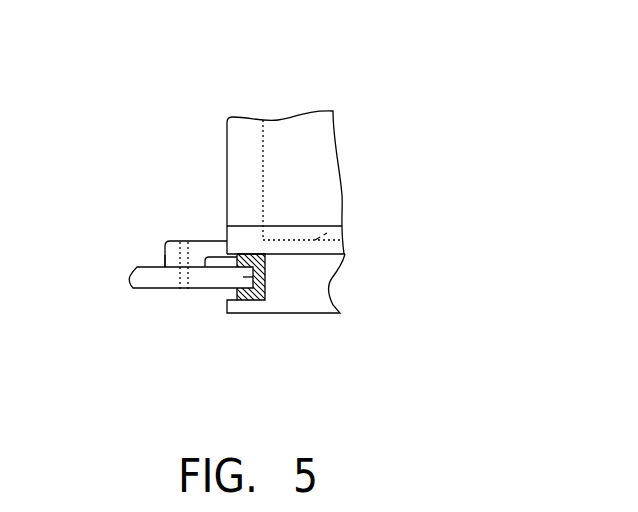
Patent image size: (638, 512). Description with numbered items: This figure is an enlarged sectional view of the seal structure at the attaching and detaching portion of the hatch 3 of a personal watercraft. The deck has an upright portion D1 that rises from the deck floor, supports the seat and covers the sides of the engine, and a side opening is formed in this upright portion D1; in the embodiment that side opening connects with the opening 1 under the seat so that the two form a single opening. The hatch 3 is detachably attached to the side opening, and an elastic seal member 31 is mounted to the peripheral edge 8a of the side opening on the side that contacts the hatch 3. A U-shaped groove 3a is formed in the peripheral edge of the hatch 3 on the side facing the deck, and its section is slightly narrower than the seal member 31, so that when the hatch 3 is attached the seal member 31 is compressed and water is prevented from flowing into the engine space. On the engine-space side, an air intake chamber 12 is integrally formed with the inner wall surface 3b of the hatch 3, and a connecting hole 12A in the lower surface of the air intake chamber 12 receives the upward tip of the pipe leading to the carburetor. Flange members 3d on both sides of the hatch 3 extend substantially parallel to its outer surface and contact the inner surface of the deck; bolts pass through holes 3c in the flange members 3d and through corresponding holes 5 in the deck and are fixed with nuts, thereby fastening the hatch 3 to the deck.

The opening 1 is at (210, 225).
The air intake chamber 12 is at (277, 148).
The connecting hole 12A is at (240, 185).
The hatch 3 is at (317, 305).
The U-shaped groove 3a is at (265, 284).
The inner wall surface 3b is at (327, 233).
The holes 3c is at (183, 243).
The flange members 3d is at (167, 256).
The holes 5 is at (187, 288).
The seal member 31 is at (258, 298).
The peripheral edge 8a is at (266, 274).
The upright portion D1 is at (148, 285).